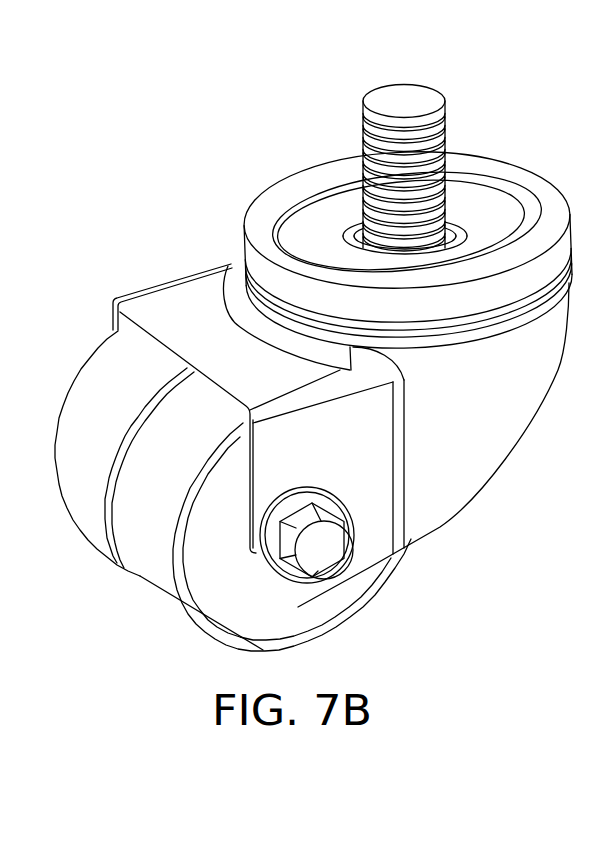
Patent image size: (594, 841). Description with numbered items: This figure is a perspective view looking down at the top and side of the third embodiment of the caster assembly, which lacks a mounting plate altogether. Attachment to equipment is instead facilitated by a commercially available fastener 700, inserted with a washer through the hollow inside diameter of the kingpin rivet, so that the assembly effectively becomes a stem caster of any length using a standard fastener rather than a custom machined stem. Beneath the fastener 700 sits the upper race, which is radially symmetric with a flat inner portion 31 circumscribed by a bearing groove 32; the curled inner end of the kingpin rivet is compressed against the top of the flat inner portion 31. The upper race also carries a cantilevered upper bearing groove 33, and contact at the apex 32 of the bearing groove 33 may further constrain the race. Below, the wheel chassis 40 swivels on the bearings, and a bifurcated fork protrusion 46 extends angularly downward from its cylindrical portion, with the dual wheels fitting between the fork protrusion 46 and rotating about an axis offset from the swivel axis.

The fastener 700 is at (352, 92).
The flat inner portion 31 is at (337, 207).
The bearing groove 32 is at (280, 193).
The upper bearing groove 33 is at (248, 210).
The wheel chassis 40 is at (203, 263).
The fork protrusion 46 is at (188, 298).